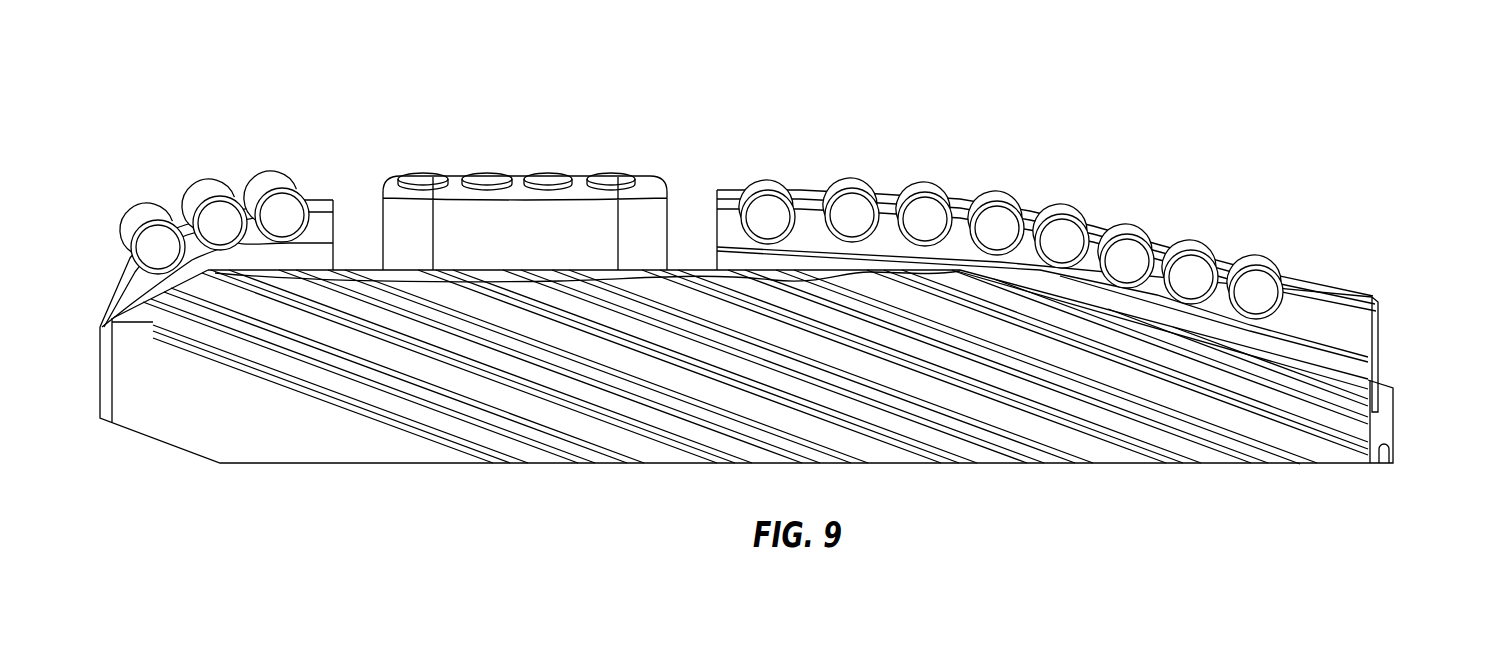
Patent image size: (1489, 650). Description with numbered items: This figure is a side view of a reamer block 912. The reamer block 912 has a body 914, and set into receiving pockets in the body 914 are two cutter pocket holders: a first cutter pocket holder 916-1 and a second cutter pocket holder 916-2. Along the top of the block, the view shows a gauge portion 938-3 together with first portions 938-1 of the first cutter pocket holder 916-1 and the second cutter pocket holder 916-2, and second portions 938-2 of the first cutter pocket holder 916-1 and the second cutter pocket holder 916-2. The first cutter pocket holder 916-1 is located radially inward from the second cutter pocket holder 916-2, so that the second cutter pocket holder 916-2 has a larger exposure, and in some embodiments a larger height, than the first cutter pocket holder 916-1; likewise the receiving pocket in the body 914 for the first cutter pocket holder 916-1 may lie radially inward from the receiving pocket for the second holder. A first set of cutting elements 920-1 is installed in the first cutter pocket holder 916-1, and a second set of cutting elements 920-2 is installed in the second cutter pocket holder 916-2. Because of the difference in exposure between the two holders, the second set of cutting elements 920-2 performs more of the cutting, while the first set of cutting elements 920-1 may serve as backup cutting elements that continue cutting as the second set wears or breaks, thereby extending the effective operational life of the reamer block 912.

The reamer block 912 is at (1383, 72).
The body 914 is at (1350, 443).
The first cutter pocket holder 916-1 is at (1357, 335).
The second cutter pocket holder 916-2 is at (1363, 300).
The first set of cutting elements 920-1 is at (927, 210).
The second set of cutting elements 920-2 is at (1057, 203).
The first portions 938-1 is at (296, 156).
The second portions 938-2 is at (1236, 236).
The gauge portion 938-3 is at (655, 215).